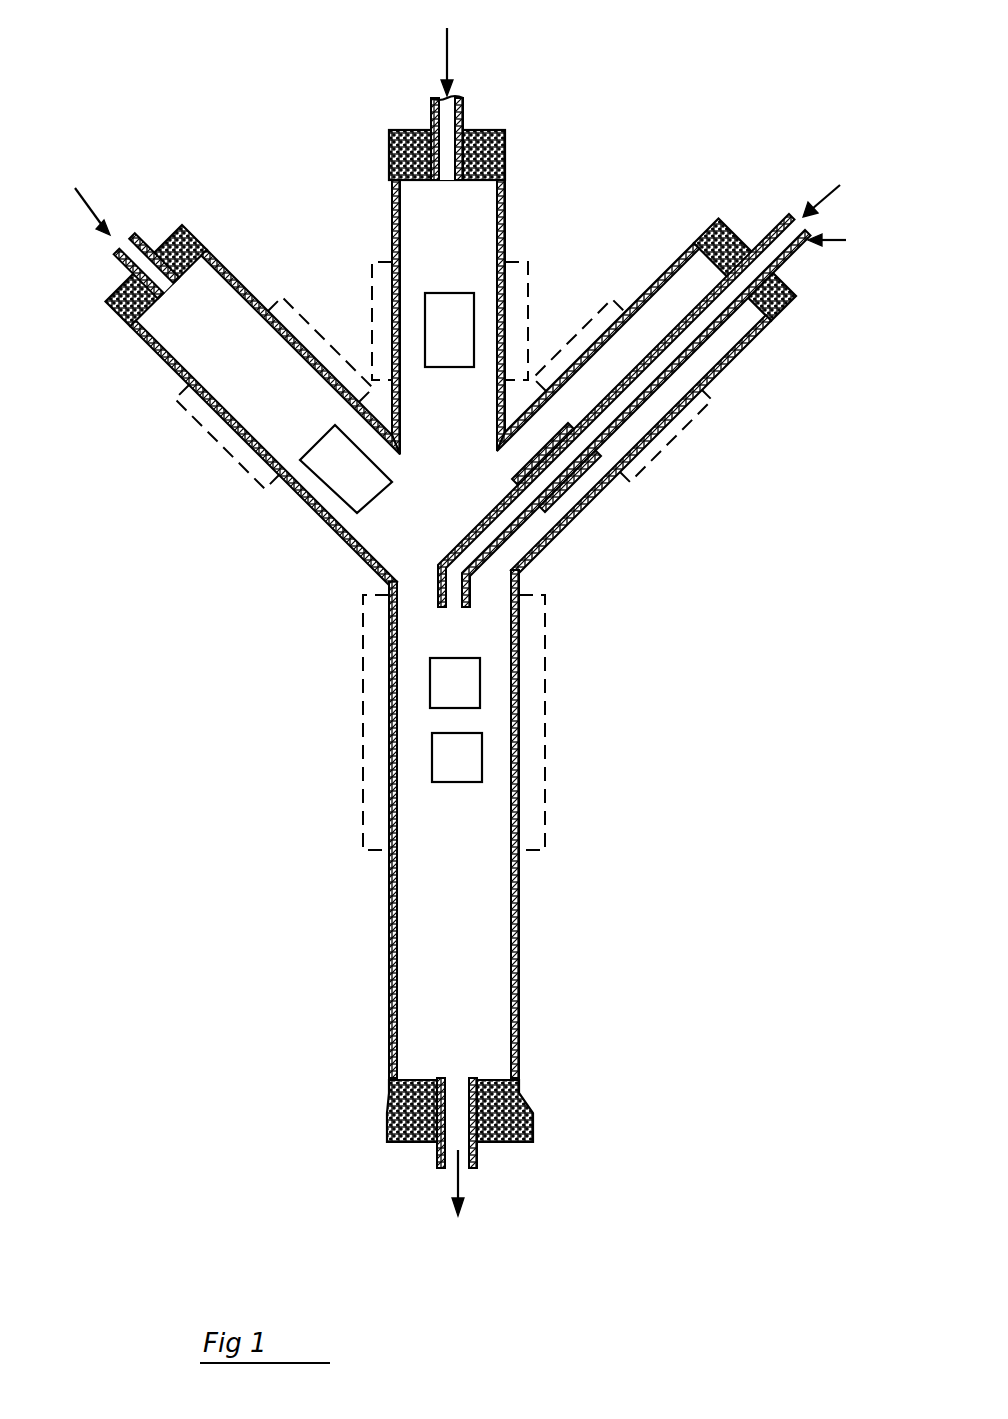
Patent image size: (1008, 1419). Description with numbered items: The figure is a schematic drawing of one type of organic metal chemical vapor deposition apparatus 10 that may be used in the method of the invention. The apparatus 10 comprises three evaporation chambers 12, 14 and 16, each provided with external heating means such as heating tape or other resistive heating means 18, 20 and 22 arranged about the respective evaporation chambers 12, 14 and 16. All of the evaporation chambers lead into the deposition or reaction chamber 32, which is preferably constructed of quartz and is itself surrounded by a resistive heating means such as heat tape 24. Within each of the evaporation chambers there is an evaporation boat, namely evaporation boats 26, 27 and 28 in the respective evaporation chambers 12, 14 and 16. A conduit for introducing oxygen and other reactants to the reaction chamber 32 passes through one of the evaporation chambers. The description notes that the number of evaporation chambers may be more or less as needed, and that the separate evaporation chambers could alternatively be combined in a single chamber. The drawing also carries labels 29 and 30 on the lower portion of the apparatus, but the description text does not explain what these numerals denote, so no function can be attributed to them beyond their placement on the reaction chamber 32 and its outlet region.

The chemical vapor deposition apparatus 10 is at (697, 682).
The evaporation chamber 12 is at (758, 337).
The evaporation chamber 14 is at (504, 214).
The evaporation chamber 16 is at (246, 286).
The resistive heating means 18 is at (704, 428).
The resistive heating means 20 is at (528, 285).
The resistive heating means 22 is at (318, 326).
The heat tape 24 is at (548, 750).
The evaporation boat 26 is at (580, 479).
The evaporation boat 27 is at (452, 292).
The evaporation boat 28 is at (320, 442).
The sample boats 29 is at (430, 686).
The outlet cap 30 is at (534, 1126).
The reaction chamber 32 is at (474, 876).